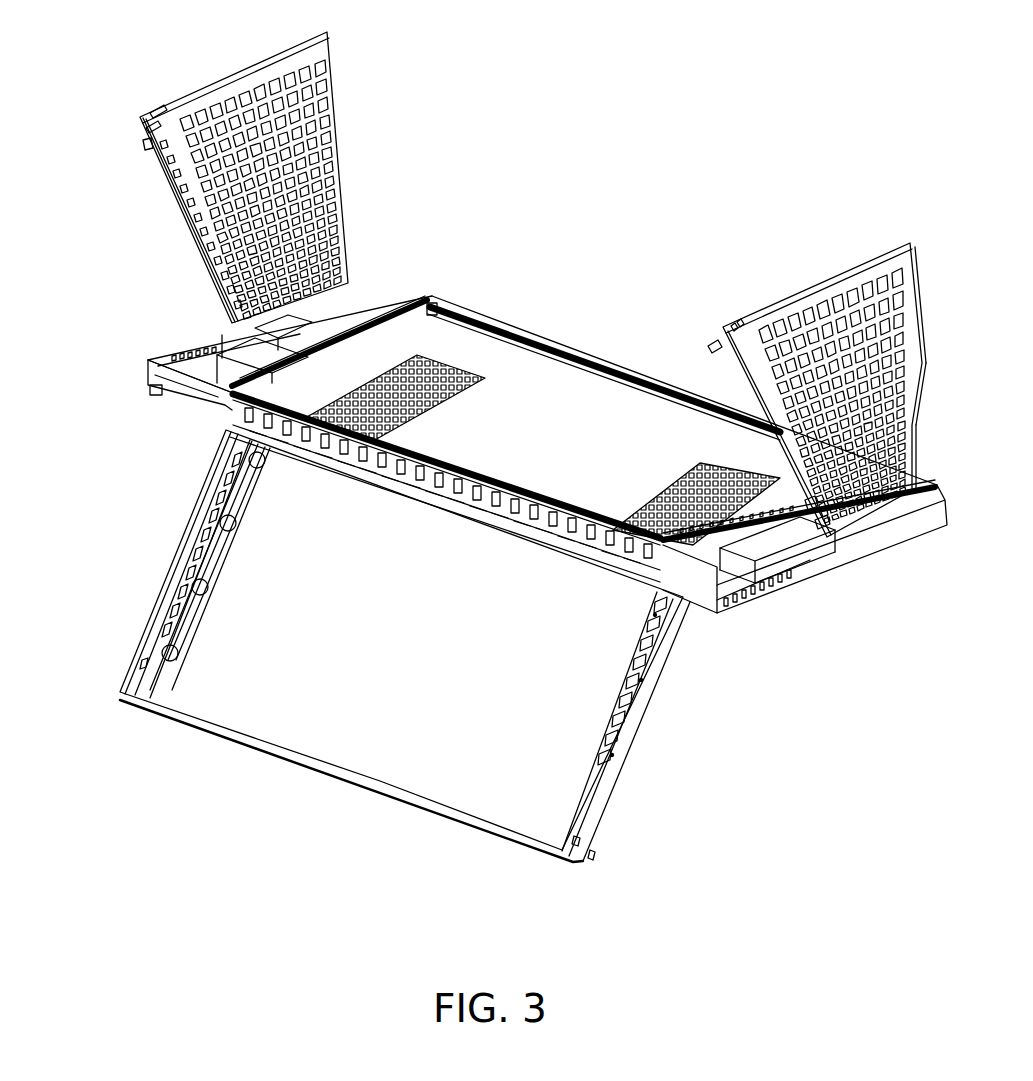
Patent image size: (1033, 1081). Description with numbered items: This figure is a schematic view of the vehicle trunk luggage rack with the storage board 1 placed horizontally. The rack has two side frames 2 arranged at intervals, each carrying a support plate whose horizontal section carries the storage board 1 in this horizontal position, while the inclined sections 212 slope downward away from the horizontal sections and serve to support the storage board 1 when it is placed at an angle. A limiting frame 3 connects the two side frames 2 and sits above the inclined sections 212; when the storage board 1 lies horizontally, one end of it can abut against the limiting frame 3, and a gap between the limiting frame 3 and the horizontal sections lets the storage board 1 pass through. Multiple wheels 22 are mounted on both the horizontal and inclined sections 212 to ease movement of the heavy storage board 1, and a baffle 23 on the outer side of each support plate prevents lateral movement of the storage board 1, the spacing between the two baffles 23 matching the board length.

The storage board 1 is at (510, 380).
The side frame 2 is at (163, 413).
The limiting frame 3 is at (563, 550).
The wheel 22 is at (190, 593).
The baffle 23 is at (165, 570).
The inclined section 212 is at (223, 572).